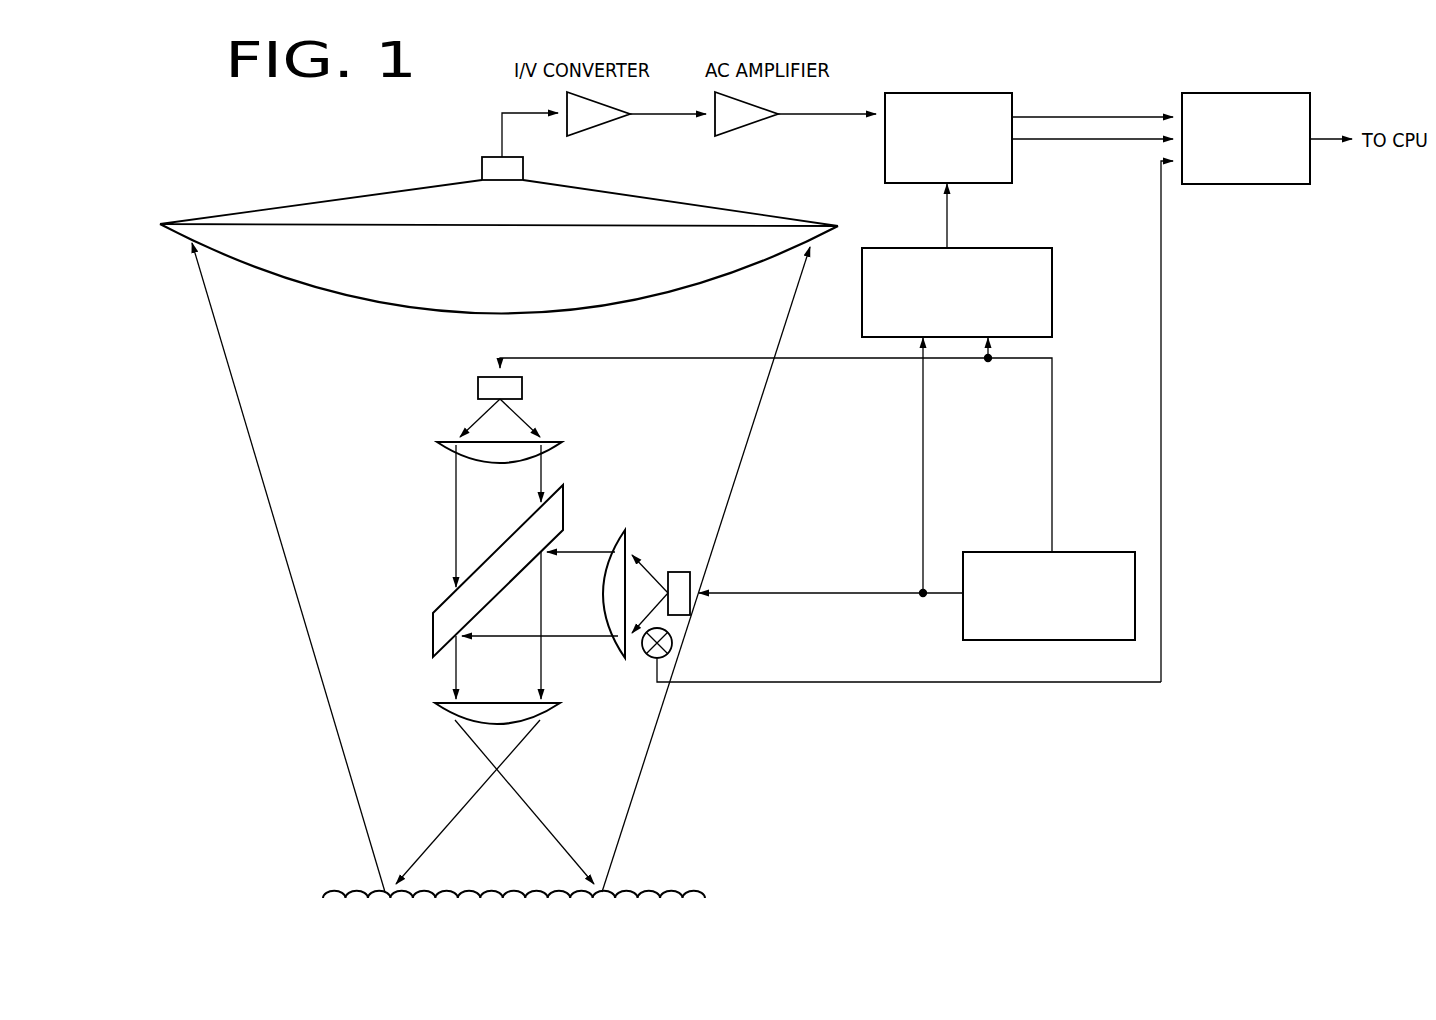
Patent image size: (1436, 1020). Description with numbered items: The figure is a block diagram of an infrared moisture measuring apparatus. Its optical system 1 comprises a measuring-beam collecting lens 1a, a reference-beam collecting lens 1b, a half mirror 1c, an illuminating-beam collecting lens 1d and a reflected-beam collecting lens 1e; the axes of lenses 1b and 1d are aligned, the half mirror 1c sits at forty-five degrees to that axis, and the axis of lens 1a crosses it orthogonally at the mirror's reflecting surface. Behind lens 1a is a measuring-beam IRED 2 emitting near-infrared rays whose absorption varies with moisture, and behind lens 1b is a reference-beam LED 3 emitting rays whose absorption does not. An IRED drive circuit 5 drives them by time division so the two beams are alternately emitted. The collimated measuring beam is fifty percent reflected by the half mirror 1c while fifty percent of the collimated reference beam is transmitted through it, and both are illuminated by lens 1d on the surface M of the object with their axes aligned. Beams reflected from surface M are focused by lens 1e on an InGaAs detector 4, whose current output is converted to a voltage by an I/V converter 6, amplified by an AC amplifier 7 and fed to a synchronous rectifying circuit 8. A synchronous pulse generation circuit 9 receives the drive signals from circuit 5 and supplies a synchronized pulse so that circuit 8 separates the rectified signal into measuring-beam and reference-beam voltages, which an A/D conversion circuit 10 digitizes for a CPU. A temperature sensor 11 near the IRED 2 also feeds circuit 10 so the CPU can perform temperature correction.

The optical system 1 is at (311, 714).
The measuring-beam collecting lens 1a is at (600, 612).
The reference-beam collecting lens 1b is at (478, 463).
The half mirror 1c is at (433, 630).
The illuminating-beam collecting lens 1d is at (480, 722).
The reflected-beam collecting lens 1e is at (398, 308).
The measuring-beam IRED 2 is at (676, 572).
The reference-beam LED 3 is at (522, 388).
The InGaAs detector 4 is at (482, 160).
The IRED drive circuit 5 is at (1070, 552).
The I/V converter 6 is at (590, 128).
The AC amplifier 7 is at (742, 128).
The synchronous rectifying circuit 8 is at (918, 93).
The synchronous pulse generation circuit 9 is at (990, 248).
The A/D conversion circuit 10 is at (1218, 93).
The temperature sensor 11 is at (675, 635).
The surface of object to be measured M is at (660, 893).